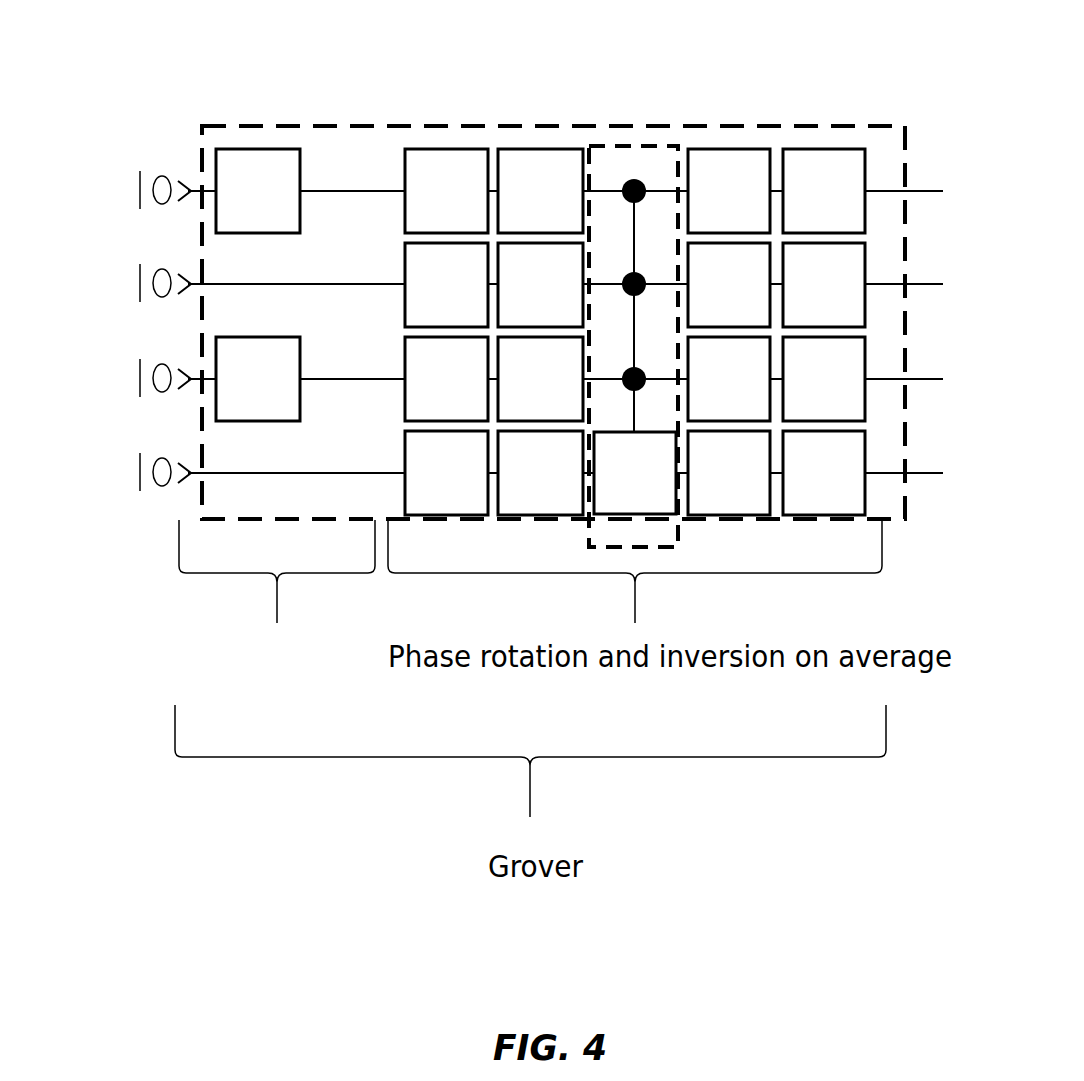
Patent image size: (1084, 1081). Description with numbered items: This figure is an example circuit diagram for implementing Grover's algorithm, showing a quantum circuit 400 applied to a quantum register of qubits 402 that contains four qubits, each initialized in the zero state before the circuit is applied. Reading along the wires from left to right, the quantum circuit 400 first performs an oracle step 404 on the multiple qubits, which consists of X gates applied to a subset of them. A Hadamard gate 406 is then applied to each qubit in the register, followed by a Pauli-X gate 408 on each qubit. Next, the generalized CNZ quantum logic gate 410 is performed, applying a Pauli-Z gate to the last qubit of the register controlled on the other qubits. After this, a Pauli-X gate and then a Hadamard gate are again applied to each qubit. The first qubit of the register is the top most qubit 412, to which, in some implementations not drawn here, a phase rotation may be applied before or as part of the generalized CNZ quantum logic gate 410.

The quantum circuit 400 is at (261, 116).
The quantum register of qubits 402 is at (117, 385).
The oracle step 404 is at (263, 711).
The Hadamard gate 406 is at (453, 134).
The Pauli-X gate 408 is at (547, 134).
The generalized CNZ quantum logic gate 410 is at (640, 134).
The top most qubit 412 is at (351, 182).